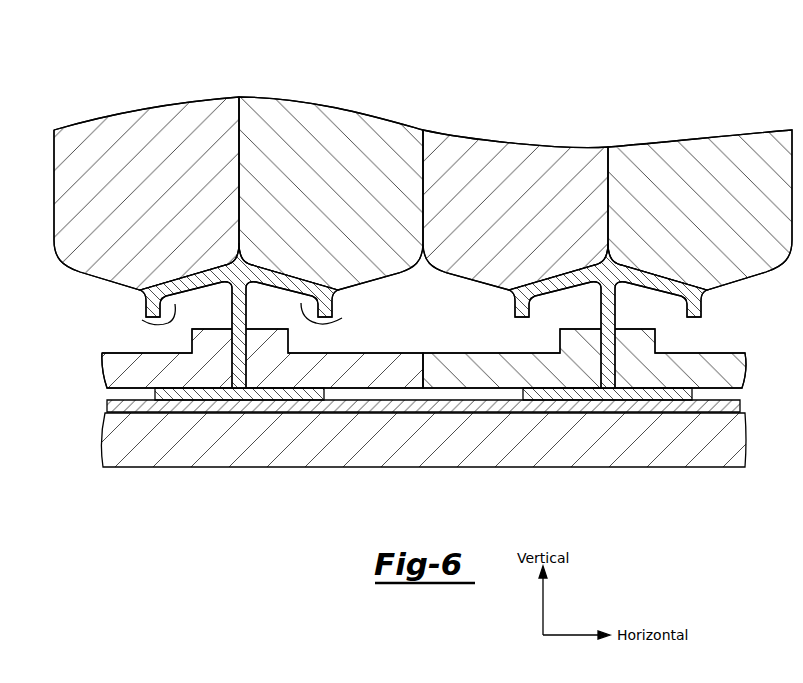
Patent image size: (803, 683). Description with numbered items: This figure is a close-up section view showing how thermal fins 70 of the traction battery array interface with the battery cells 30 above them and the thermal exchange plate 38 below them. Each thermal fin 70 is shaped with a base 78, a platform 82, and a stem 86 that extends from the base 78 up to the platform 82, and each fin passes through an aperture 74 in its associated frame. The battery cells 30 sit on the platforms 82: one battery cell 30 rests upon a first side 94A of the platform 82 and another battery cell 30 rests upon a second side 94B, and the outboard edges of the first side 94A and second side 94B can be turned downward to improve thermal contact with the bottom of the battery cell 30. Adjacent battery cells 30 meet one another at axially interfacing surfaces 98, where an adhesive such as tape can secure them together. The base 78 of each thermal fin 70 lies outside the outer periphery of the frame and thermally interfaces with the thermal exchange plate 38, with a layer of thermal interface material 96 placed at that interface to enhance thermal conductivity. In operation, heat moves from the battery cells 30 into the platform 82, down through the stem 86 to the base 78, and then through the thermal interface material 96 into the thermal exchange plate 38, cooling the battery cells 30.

The battery cell 30 is at (702, 183).
The axially interfacing surface 98 is at (240, 142).
The platform 82 is at (207, 280).
The first side 94A is at (142, 320).
The second side 94B is at (342, 318).
The thermal fin 70 is at (305, 392).
The aperture 74 is at (243, 374).
The stem 86 is at (232, 370).
The base 78 is at (177, 393).
The thermal interface material 96 is at (123, 400).
The thermal exchange plate 38 is at (690, 443).